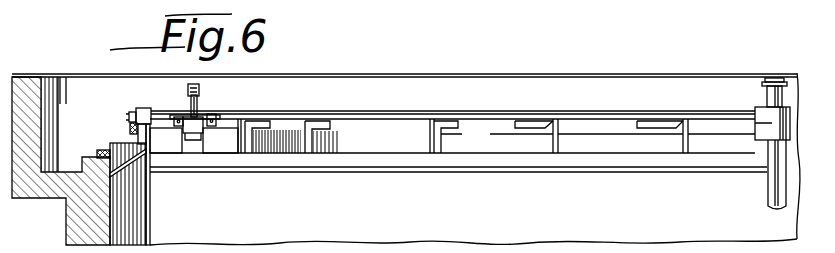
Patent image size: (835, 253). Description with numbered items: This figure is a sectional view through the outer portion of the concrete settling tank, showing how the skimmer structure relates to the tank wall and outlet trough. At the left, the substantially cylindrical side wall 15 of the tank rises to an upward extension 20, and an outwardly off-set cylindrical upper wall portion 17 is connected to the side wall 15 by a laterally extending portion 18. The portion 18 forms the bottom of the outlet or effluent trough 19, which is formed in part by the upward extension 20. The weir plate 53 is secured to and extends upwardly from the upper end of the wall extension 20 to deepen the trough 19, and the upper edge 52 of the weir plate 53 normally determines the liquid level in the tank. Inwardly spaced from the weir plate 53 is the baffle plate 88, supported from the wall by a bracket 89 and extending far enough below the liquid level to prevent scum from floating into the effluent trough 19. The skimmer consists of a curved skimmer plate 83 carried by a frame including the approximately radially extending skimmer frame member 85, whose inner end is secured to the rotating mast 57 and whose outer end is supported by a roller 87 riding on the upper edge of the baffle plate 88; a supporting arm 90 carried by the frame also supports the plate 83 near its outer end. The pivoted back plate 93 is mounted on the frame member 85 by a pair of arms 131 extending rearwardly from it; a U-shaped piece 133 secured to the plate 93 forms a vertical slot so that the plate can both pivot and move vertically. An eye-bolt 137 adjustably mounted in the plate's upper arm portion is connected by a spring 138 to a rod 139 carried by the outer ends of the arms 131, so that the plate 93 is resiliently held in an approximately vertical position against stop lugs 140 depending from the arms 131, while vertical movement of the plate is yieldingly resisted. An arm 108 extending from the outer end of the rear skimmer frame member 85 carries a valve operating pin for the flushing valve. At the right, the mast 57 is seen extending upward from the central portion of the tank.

The side wall 15 is at (72, 229).
The upper wall portion 17 is at (28, 78).
The laterally extending portion 18 is at (46, 186).
The effluent trough 19 is at (60, 168).
The upward extension 20 is at (86, 160).
The upper edge 52 is at (130, 126).
The weir plate 53 is at (101, 151).
The mast 57 is at (768, 192).
The skimmer plate 83 is at (387, 146).
The skimmer frame member 85 is at (606, 112).
The roller 87 is at (143, 108).
The baffle plate 88 is at (146, 150).
The bracket 89 is at (135, 176).
The supporting arm 90 is at (518, 126).
The back plate 93 is at (201, 141).
The arm 108 is at (130, 114).
The arms 131 is at (177, 117).
The U-shaped piece 133 is at (197, 134).
The eye-bolt 137 is at (197, 98).
The spring 138 is at (190, 90).
The rod 139 is at (211, 116).
The stop lugs 140 is at (194, 140).